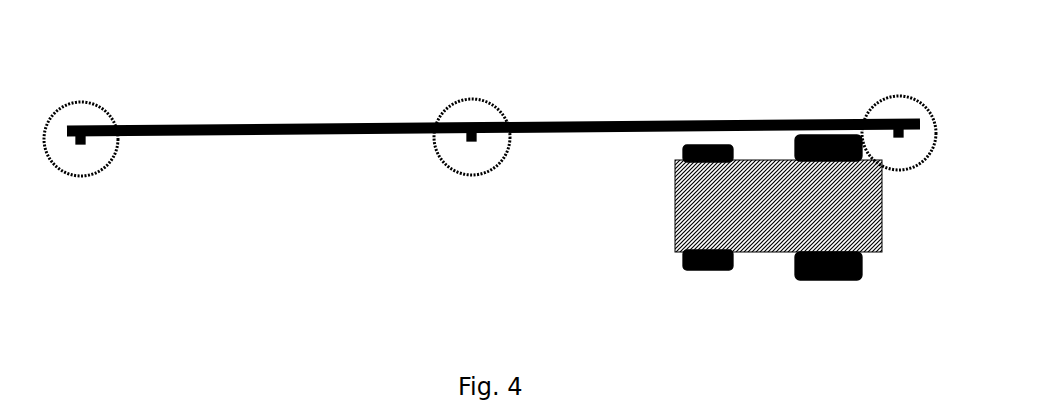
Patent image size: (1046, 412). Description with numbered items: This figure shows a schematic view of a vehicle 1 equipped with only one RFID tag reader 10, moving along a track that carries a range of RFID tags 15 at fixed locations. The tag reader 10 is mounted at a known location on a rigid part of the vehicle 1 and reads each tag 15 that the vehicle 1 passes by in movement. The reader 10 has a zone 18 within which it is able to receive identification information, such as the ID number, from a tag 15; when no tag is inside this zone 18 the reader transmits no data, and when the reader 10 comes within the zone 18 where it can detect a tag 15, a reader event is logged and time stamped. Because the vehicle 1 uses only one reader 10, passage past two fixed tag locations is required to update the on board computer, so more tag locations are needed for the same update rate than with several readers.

The vehicle 1 is at (716, 207).
The RFID tag reader 10 is at (677, 163).
The RFID tag 15 is at (80, 130).
The zone 18 is at (113, 162).